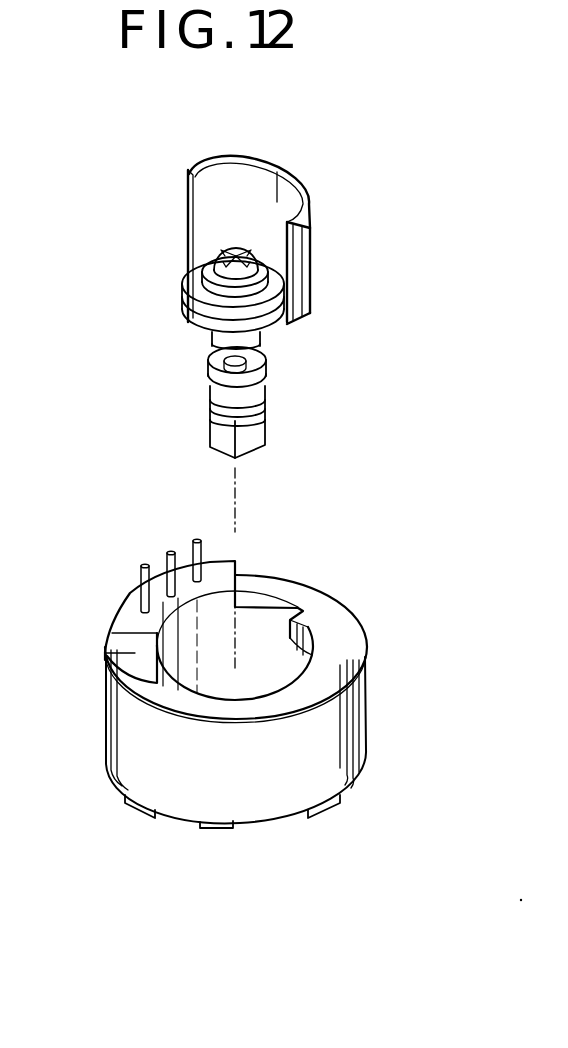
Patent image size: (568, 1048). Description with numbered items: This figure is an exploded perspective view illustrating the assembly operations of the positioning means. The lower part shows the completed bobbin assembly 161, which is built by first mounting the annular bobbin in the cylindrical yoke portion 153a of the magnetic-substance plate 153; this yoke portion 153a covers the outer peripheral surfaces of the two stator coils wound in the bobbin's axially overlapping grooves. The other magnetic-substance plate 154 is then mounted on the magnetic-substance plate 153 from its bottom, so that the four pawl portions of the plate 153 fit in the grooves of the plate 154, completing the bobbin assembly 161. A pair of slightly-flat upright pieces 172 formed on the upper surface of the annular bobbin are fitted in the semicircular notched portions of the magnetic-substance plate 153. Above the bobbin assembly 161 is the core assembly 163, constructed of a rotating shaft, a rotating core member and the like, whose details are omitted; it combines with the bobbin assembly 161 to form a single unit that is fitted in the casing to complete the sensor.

The core assembly 163 is at (279, 360).
The bobbin assembly 161 is at (227, 707).
The magnetic-substance plate 153 is at (328, 615).
The cylindrical yoke portion 153a is at (325, 770).
The upright pieces 172 is at (273, 598).
The magnetic-substance plate 154 is at (200, 829).